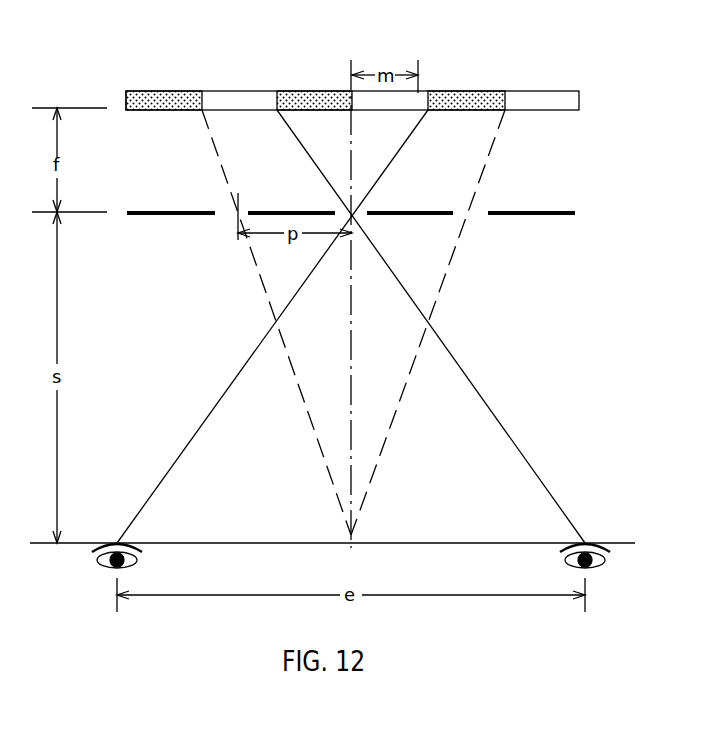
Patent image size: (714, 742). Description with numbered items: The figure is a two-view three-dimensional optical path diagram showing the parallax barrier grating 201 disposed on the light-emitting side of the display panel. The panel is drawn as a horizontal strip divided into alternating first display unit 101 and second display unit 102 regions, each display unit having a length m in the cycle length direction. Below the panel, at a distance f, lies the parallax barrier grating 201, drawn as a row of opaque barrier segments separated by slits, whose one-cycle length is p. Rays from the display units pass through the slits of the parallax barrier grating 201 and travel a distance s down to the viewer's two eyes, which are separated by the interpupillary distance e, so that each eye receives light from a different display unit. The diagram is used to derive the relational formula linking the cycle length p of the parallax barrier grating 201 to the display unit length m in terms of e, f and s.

The first display unit 101 is at (530, 103).
The second display unit 102 is at (182, 100).
The parallax barrier grating 201 is at (552, 213).